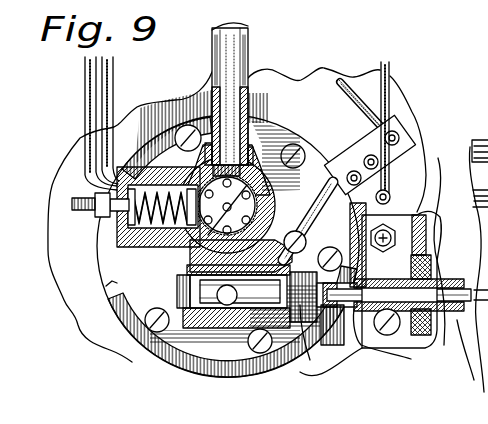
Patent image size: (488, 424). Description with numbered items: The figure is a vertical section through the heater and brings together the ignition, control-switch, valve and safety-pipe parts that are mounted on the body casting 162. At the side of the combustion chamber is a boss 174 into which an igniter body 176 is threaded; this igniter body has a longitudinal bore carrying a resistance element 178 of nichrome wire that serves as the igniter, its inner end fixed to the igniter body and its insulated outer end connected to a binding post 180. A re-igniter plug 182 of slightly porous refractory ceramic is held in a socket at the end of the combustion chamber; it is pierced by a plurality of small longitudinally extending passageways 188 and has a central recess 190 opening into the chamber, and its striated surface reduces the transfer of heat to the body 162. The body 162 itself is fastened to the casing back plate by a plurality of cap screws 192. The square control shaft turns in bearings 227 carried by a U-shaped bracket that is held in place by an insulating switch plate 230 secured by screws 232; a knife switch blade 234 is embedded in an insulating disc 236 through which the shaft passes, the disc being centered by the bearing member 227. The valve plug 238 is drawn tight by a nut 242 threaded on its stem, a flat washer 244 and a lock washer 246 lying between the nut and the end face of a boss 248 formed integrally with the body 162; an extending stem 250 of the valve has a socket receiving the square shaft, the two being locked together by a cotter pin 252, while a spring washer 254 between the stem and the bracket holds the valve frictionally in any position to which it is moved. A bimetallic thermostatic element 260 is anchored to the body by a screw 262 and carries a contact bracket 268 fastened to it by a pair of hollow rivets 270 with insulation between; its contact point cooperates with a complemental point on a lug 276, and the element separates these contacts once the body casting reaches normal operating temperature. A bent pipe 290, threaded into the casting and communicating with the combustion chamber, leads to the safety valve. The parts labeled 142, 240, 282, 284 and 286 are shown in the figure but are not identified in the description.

The housing 142 is at (80, 309).
The body casting 162 is at (94, 277).
The boss 174 is at (183, 254).
The igniter body 176 is at (127, 235).
The resistance element 178 is at (110, 184).
The binding post 180 is at (96, 190).
The re-igniter plug 182 is at (207, 167).
The passageways 188 is at (250, 160).
The recess 190 is at (190, 258).
The cap screws 192 is at (170, 120).
The bearings 227 is at (432, 293).
The insulating switch plate 230 is at (414, 200).
The screws 232 is at (420, 340).
The knife switch blade 234 is at (421, 216).
The disc 236 is at (437, 258).
The valve plug 238 is at (187, 292).
The valve body 240 is at (187, 284).
The nut 242 is at (380, 352).
The flat washer 244 is at (348, 324).
The lock washer 246 is at (318, 330).
The boss 248 is at (205, 335).
The extending stem 250 is at (371, 332).
The cotter pin 252 is at (350, 262).
The spring washer 254 is at (393, 343).
The bimetallic thermostatic element 260 is at (334, 200).
The screw 262 is at (333, 207).
The contact bracket 268 is at (372, 133).
The hollow rivets 270 is at (356, 170).
The lug 276 is at (392, 212).
The conductor wire 282 is at (389, 73).
The conductor tube 284 is at (85, 68).
The conductor wire 286 is at (100, 86).
The bent pipe 290 is at (212, 57).